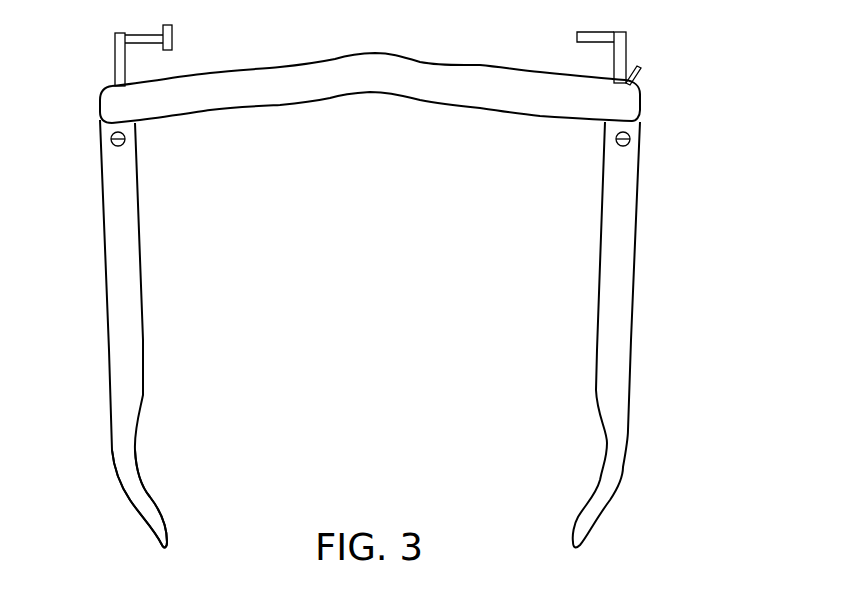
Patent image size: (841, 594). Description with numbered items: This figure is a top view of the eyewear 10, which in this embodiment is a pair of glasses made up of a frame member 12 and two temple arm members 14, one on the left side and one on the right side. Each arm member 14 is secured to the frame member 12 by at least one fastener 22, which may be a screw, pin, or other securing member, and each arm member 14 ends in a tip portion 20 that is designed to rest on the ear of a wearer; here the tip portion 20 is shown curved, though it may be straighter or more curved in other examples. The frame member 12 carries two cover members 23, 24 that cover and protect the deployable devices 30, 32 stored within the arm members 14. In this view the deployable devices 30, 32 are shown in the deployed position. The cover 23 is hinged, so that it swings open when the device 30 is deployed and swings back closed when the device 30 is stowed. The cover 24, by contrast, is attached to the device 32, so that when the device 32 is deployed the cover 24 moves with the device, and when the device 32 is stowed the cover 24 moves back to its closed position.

The eyewear 10 is at (712, 200).
The frame member 12 is at (372, 97).
The temple arm member 14 is at (105, 278).
The tip portion 20 is at (139, 516).
The fastener 22 is at (100, 125).
The cover member 23 is at (644, 72).
The cover member 24 is at (173, 38).
The deployable device 30 is at (627, 35).
The deployable device 32 is at (114, 36).